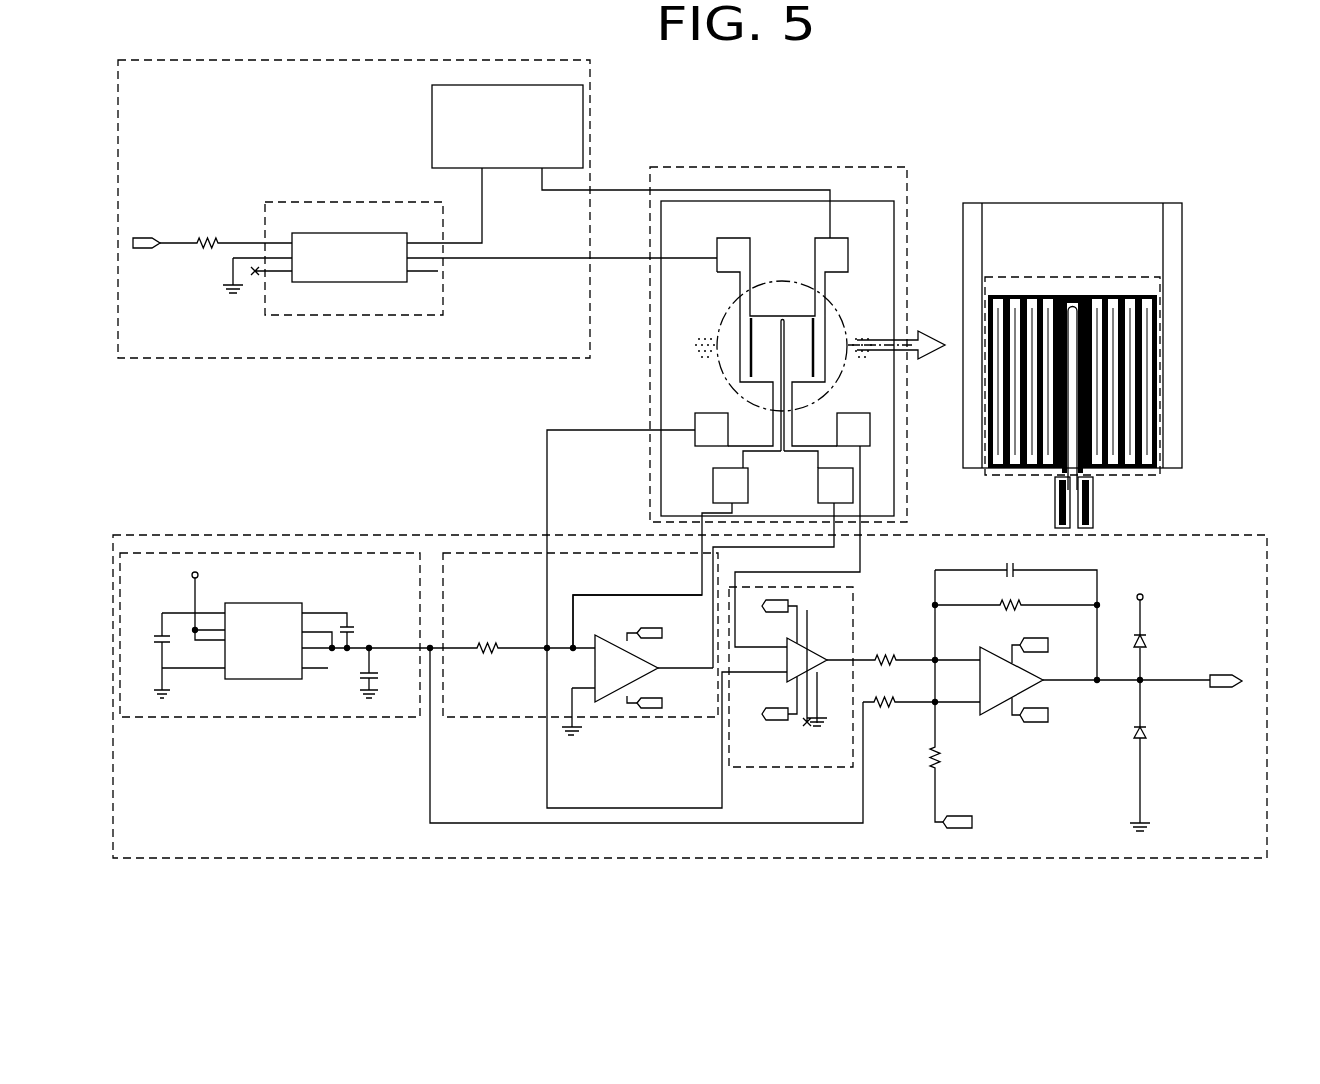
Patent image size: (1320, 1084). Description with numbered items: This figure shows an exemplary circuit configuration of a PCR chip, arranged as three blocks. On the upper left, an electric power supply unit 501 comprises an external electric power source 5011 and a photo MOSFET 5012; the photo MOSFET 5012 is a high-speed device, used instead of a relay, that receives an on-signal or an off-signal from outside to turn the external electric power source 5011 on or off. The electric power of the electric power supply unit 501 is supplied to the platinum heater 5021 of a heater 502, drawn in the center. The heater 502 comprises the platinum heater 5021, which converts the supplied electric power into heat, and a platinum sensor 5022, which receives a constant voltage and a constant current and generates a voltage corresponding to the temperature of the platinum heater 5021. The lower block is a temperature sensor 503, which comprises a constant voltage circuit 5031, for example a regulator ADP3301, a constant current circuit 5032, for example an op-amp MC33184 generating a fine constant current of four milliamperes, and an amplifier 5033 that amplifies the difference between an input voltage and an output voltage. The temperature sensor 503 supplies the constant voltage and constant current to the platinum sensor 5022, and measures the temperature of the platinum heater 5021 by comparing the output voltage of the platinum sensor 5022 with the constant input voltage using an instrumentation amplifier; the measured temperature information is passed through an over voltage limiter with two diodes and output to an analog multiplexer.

The electric power supply unit 501 is at (170, 358).
The external electric power source 5011 is at (432, 117).
The photo MOSFET 5012 is at (302, 200).
The heater 502 is at (833, 165).
The platinum heater 5021 is at (1070, 275).
The platinum sensor 5022 is at (1100, 490).
The temperature sensor 503 is at (323, 535).
The constant voltage circuit 5031 is at (168, 555).
The constant current circuit 5032 is at (468, 553).
The amplifier 5033 is at (855, 602).